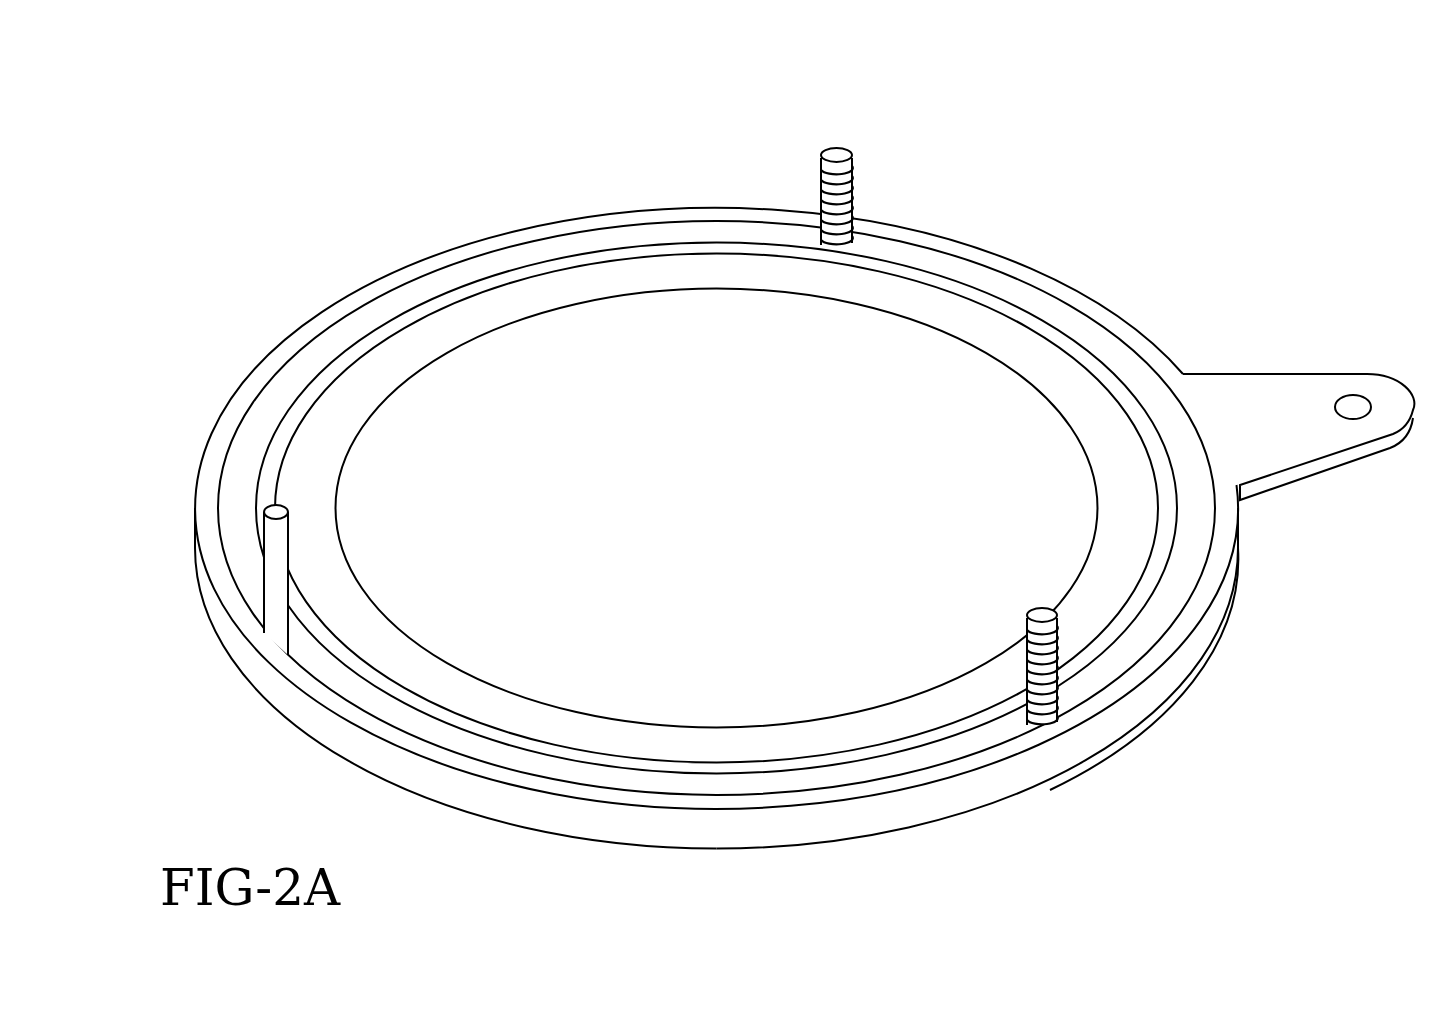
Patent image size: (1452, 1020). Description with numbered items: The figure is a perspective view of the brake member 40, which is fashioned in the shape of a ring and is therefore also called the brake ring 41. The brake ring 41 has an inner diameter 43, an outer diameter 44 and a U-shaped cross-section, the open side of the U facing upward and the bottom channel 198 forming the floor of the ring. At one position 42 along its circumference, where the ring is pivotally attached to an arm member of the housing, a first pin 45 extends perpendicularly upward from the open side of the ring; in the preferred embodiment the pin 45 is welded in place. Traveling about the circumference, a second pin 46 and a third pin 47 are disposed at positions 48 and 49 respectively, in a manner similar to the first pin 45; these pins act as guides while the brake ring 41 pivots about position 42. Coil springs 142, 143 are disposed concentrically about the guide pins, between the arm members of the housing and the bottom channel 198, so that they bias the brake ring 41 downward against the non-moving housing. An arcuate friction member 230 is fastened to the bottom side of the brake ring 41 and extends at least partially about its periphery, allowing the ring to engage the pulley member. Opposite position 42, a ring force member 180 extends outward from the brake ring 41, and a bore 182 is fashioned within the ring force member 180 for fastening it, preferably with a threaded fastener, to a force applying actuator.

The brake member 40 is at (1012, 232).
The brake ring 41 is at (1073, 256).
The position 42 is at (228, 670).
The inner diameter 43 is at (318, 605).
The outer diameter 44 is at (290, 328).
The first pin 45 is at (275, 520).
The second pin 46 is at (1057, 614).
The third pin 47 is at (843, 156).
The position 48 is at (1100, 765).
The position 49 is at (843, 128).
The coil spring 142 is at (1025, 690).
The coil spring 143 is at (818, 177).
The ring force member 180 is at (1245, 400).
The bore 182 is at (1369, 409).
The bottom channel 198 is at (803, 235).
The friction member 230 is at (1243, 602).